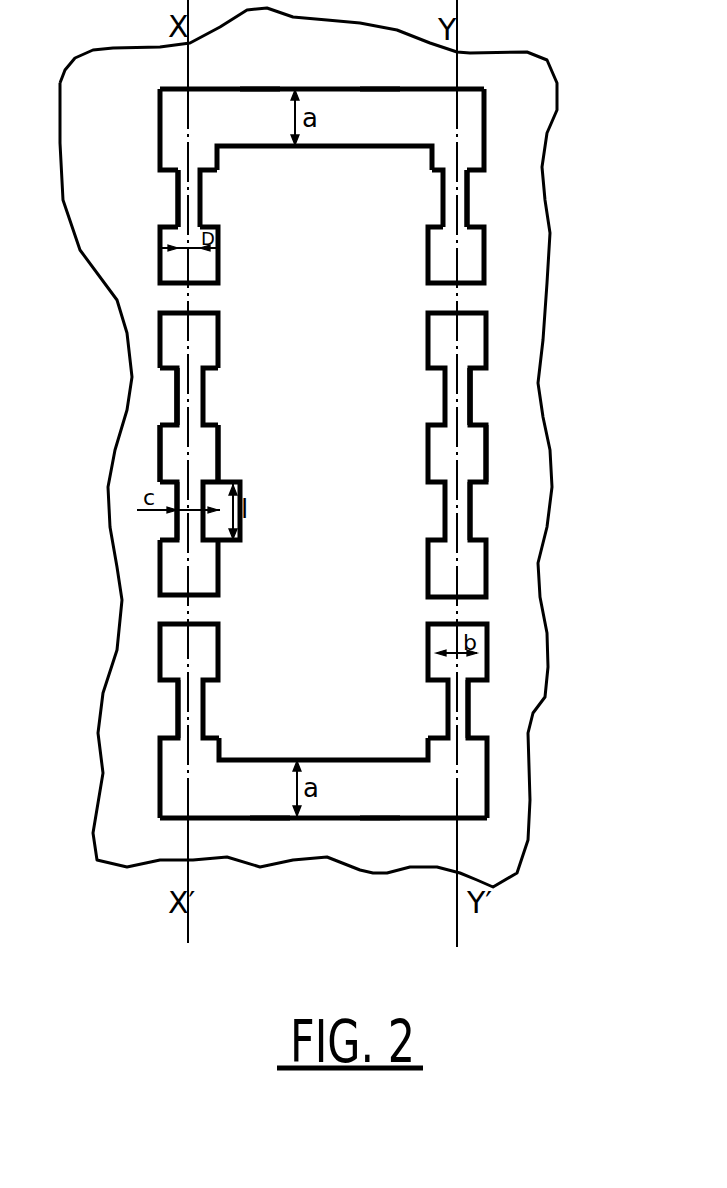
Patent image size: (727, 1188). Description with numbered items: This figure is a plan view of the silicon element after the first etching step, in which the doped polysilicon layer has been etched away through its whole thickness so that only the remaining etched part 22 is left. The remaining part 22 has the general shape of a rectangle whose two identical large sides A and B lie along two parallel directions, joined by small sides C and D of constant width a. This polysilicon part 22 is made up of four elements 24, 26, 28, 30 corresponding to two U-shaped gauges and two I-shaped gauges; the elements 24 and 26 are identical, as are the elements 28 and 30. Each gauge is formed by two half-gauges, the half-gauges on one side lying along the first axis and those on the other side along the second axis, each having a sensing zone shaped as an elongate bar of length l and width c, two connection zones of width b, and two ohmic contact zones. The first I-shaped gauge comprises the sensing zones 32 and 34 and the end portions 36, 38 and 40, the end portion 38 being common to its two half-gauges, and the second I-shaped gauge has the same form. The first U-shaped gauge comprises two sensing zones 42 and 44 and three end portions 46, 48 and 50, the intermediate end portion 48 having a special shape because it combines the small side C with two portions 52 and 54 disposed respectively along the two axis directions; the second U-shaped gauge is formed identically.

The remaining etched part of polysilicon 22 is at (300, 433).
The polysilicon element 24 is at (357, 147).
The polysilicon element 26 is at (273, 758).
The polysilicon element 28 is at (220, 433).
The polysilicon element 30 is at (426, 452).
The sensing zone 32 is at (203, 382).
The sensing zone 34 is at (203, 527).
The end portion 36 is at (218, 313).
The end portion 38 is at (207, 465).
The end portion 40 is at (207, 577).
The sensing zone 42 is at (200, 192).
The sensing zone 44 is at (442, 192).
The end portion 46 is at (163, 267).
The intermediate end portion 48 is at (277, 98).
The end portion 50 is at (472, 248).
The portion 52 is at (173, 118).
The portion 54 is at (477, 125).